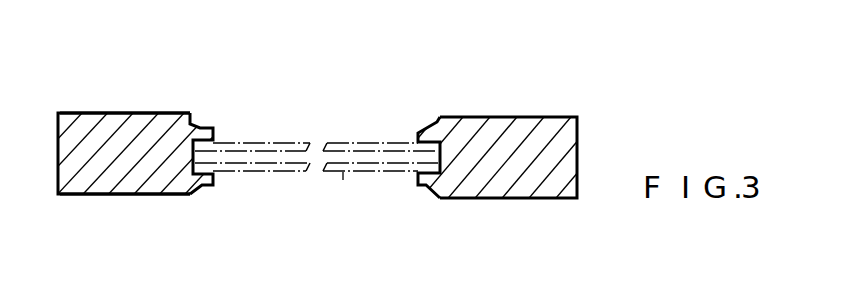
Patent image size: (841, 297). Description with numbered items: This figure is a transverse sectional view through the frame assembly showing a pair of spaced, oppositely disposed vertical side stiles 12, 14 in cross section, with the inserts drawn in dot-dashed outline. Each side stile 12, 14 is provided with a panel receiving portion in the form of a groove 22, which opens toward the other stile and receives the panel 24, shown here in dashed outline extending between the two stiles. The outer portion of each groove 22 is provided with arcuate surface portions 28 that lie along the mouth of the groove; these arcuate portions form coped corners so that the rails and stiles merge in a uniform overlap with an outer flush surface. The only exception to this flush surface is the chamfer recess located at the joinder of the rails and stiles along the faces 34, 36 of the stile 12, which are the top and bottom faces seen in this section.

The side stile 12 is at (97, 188).
The side stile 14 is at (538, 200).
The groove 22 is at (205, 151).
The panel 24 is at (345, 186).
The arcuate surface portion 28 is at (198, 124).
The face 34 is at (125, 113).
The face 36 is at (144, 196).